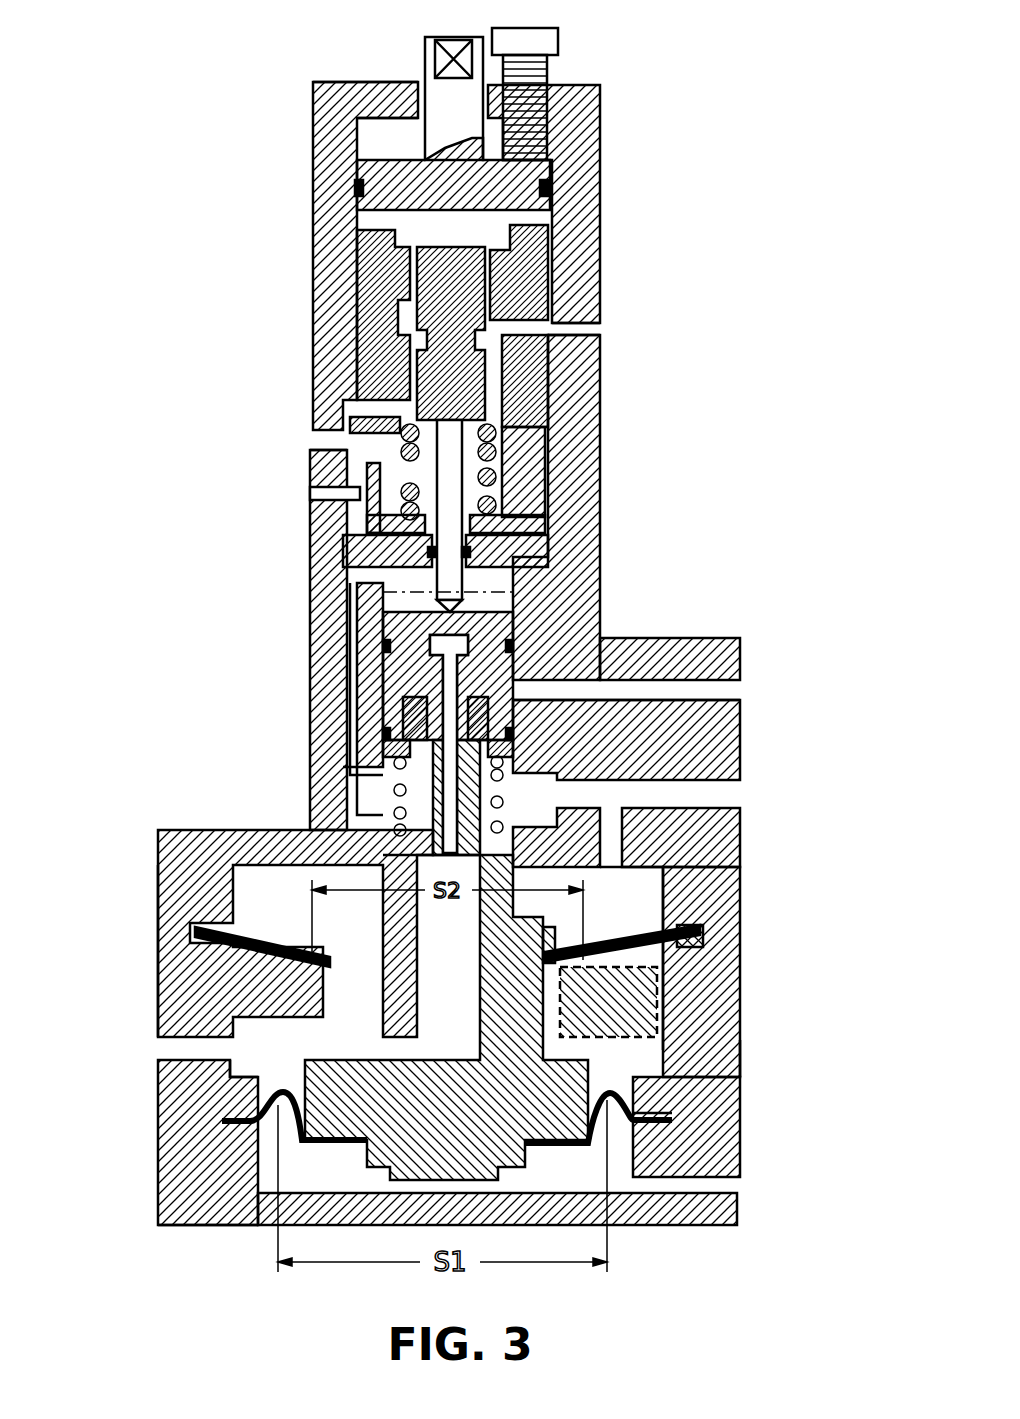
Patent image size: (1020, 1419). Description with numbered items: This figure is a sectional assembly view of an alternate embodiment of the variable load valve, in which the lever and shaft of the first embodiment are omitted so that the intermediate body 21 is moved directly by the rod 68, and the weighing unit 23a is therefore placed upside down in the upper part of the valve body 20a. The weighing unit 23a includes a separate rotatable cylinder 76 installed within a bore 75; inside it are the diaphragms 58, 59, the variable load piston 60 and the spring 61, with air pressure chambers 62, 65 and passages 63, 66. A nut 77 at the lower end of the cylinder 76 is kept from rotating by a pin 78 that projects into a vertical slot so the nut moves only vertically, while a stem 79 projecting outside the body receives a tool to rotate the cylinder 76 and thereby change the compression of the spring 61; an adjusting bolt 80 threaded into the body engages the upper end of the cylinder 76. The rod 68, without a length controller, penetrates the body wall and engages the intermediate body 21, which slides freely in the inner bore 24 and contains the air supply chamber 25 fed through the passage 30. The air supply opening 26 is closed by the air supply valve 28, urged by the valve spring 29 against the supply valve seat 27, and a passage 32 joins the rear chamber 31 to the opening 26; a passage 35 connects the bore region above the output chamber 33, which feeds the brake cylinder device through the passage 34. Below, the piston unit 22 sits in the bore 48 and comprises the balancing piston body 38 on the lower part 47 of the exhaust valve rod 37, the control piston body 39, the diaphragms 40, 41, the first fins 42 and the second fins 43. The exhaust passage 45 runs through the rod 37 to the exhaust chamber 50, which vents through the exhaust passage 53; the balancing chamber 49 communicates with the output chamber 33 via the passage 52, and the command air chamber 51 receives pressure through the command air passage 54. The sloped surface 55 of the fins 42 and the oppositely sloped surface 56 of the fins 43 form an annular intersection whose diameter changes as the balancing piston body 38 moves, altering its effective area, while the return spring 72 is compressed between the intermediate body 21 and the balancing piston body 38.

The valve body 20a is at (590, 610).
The intermediate body 21 is at (515, 612).
The piston unit 22 is at (650, 1090).
The weighing unit 23a is at (308, 296).
The inner bore 24 is at (535, 515).
The air supply chamber 25 is at (410, 742).
The air supply opening 26 is at (630, 748).
The supply valve seat 27 is at (520, 726).
The air supply valve 28 is at (425, 705).
The valve spring 29 is at (420, 718).
The passage 30 is at (733, 688).
The rear chamber 31 is at (525, 570).
The passage 32 is at (442, 660).
The output chamber 33 is at (385, 755).
The passage 34 is at (722, 802).
The passage 35 is at (368, 605).
The exhaust valve rod 37 is at (363, 785).
The balancing piston body 38 is at (528, 912).
The control piston body 39 is at (570, 1148).
The diaphragm of the balancing piston 40 is at (600, 931).
The diaphragm of the control piston 41 is at (615, 1105).
The first plurality of fins 42 is at (690, 1015).
The second plurality of fins 43 is at (245, 1000).
The exhaust passage 45 is at (448, 868).
The lower part of the exhaust valve rod 47 is at (392, 870).
The bore 48 is at (690, 1062).
The balancing chamber 49 is at (650, 885).
The exhaust chamber 50 is at (215, 1078).
The command air chamber 51 is at (242, 1205).
The passage 52 is at (603, 840).
The exhaust passage 53 is at (228, 1062).
The command air passage 54 is at (720, 1198).
The surface 55 is at (640, 985).
The surface 56 is at (302, 947).
The diaphragm 58 is at (372, 232).
The diaphragm 59 is at (375, 395).
The variable load piston 60 is at (412, 327).
The spring 61 is at (347, 457).
The air pressure chamber 62 is at (585, 182).
The passage 63 is at (500, 230).
The air pressure chamber 65 is at (508, 345).
The passage 66 is at (552, 330).
The rod 68 is at (330, 560).
The return spring 72 is at (305, 822).
The bore 75 is at (375, 110).
The rotatable cylinder 76 is at (385, 158).
The nut 77 is at (530, 480).
The pin 78 is at (325, 493).
The stem 79 is at (428, 46).
The adjusting bolt 80 is at (560, 42).